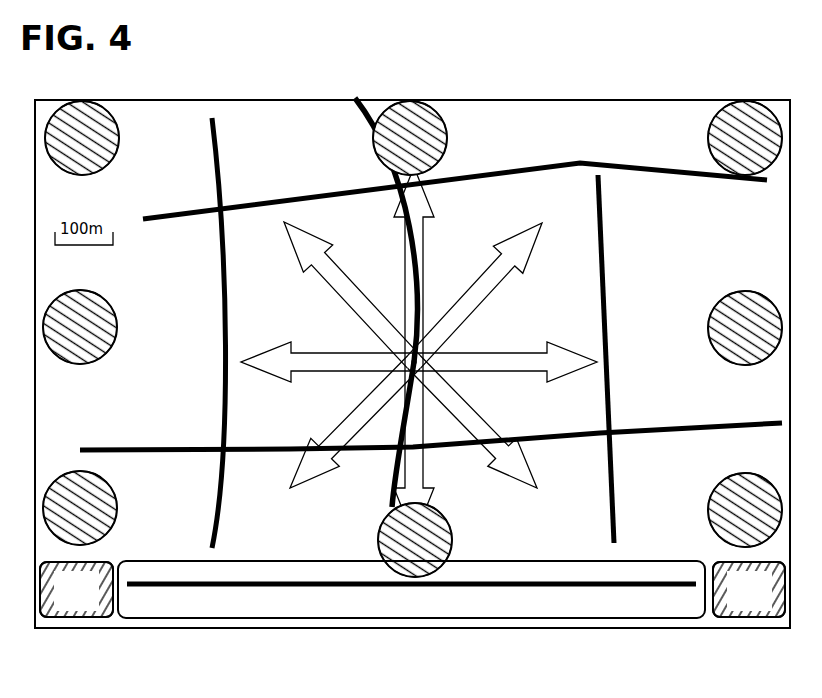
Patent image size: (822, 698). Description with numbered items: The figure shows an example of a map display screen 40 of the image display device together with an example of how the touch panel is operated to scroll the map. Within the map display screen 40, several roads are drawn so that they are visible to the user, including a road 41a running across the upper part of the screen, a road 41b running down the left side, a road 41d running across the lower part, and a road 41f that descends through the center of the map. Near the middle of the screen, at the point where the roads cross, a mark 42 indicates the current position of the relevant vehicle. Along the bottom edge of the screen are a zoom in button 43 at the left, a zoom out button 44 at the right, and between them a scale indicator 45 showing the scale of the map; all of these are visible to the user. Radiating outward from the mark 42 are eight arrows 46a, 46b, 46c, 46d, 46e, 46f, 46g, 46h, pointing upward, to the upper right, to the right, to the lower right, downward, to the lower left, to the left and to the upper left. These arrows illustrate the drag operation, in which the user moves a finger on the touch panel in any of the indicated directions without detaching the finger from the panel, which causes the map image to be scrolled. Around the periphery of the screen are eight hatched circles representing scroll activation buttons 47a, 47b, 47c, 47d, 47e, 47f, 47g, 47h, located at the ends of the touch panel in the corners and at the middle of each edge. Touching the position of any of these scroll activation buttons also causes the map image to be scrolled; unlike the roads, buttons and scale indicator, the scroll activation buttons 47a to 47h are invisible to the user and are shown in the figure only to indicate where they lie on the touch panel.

The map display screen 40 is at (367, 85).
The road 41a is at (545, 166).
The road 41b is at (221, 250).
The road 41d is at (113, 447).
The road 41f is at (360, 120).
The mark indicating the current position 42 is at (427, 360).
The zoom in button 43 is at (84, 618).
The zoom out button 44 is at (735, 618).
The scale indicator 45 is at (178, 618).
The arrow 46a is at (433, 213).
The arrow 46b is at (536, 236).
The arrow 46c is at (527, 374).
The arrow 46d is at (530, 466).
The arrow 46e is at (437, 489).
The arrow 46f is at (304, 489).
The arrow 46g is at (265, 374).
The arrow 46h is at (292, 226).
The scroll activation button 47a is at (120, 130).
The scroll activation button 47b is at (447, 140).
The scroll activation button 47c is at (709, 142).
The scroll activation button 47d is at (118, 318).
The scroll activation button 47e is at (709, 325).
The scroll activation button 47f is at (118, 498).
The scroll activation button 47g is at (452, 534).
The scroll activation button 47h is at (719, 488).